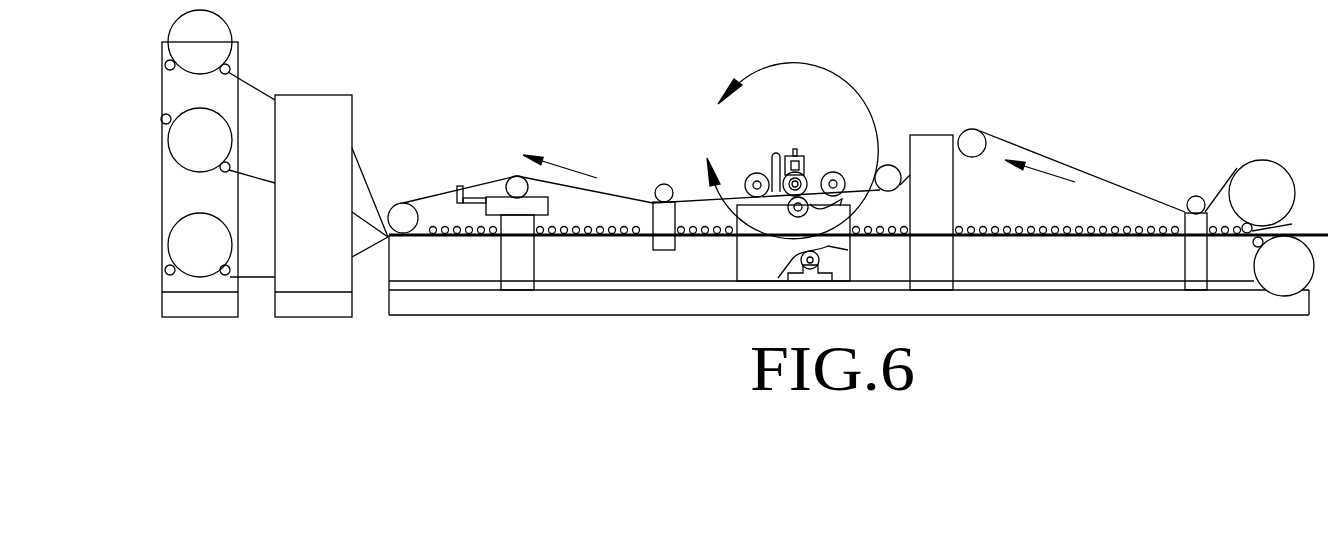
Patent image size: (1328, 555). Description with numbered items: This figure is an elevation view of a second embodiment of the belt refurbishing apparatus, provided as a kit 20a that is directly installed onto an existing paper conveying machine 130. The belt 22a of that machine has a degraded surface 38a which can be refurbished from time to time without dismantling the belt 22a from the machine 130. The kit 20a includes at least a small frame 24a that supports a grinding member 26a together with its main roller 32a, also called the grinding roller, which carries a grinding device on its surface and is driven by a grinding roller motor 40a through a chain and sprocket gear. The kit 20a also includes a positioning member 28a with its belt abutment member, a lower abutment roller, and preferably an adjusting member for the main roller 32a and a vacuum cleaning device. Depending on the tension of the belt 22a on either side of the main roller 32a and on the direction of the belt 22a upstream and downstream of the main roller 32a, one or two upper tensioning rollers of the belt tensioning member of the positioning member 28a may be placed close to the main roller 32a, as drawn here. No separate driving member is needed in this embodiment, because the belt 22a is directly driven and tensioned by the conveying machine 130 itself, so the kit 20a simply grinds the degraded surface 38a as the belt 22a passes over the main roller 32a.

The paper conveying machine 130 is at (352, 108).
The belt 22a is at (607, 190).
The kit 20a is at (705, 85).
The small frame 24a is at (740, 252).
The grinding member 26a is at (787, 135).
The main roller 32a is at (817, 177).
The positioning member 28a is at (855, 148).
The degraded surface 38a is at (1045, 155).
The grinding roller motor 40a is at (815, 263).